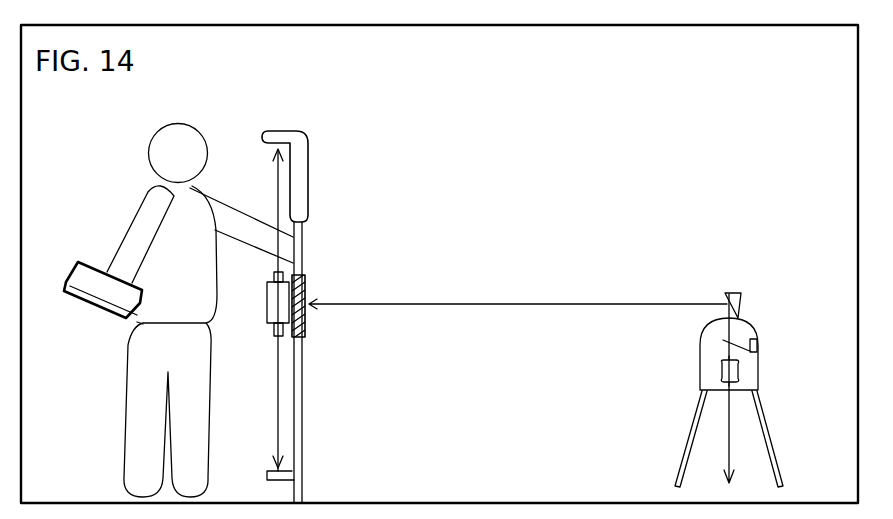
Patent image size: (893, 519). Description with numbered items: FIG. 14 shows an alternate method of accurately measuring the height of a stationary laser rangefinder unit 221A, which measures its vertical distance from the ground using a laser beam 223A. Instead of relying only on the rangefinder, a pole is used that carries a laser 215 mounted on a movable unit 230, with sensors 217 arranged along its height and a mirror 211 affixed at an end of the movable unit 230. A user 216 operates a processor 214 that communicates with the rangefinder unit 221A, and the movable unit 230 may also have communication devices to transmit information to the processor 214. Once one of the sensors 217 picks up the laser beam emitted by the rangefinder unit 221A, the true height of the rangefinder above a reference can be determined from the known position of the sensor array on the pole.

The mirror 211 is at (300, 141).
The processor 214 is at (92, 298).
The laser 215 is at (266, 302).
The user 216 is at (208, 393).
The sensors 217 is at (308, 283).
The movable unit 230 is at (303, 398).
The laser rangefinder unit 221A is at (750, 324).
The laser beam 223A is at (730, 443).